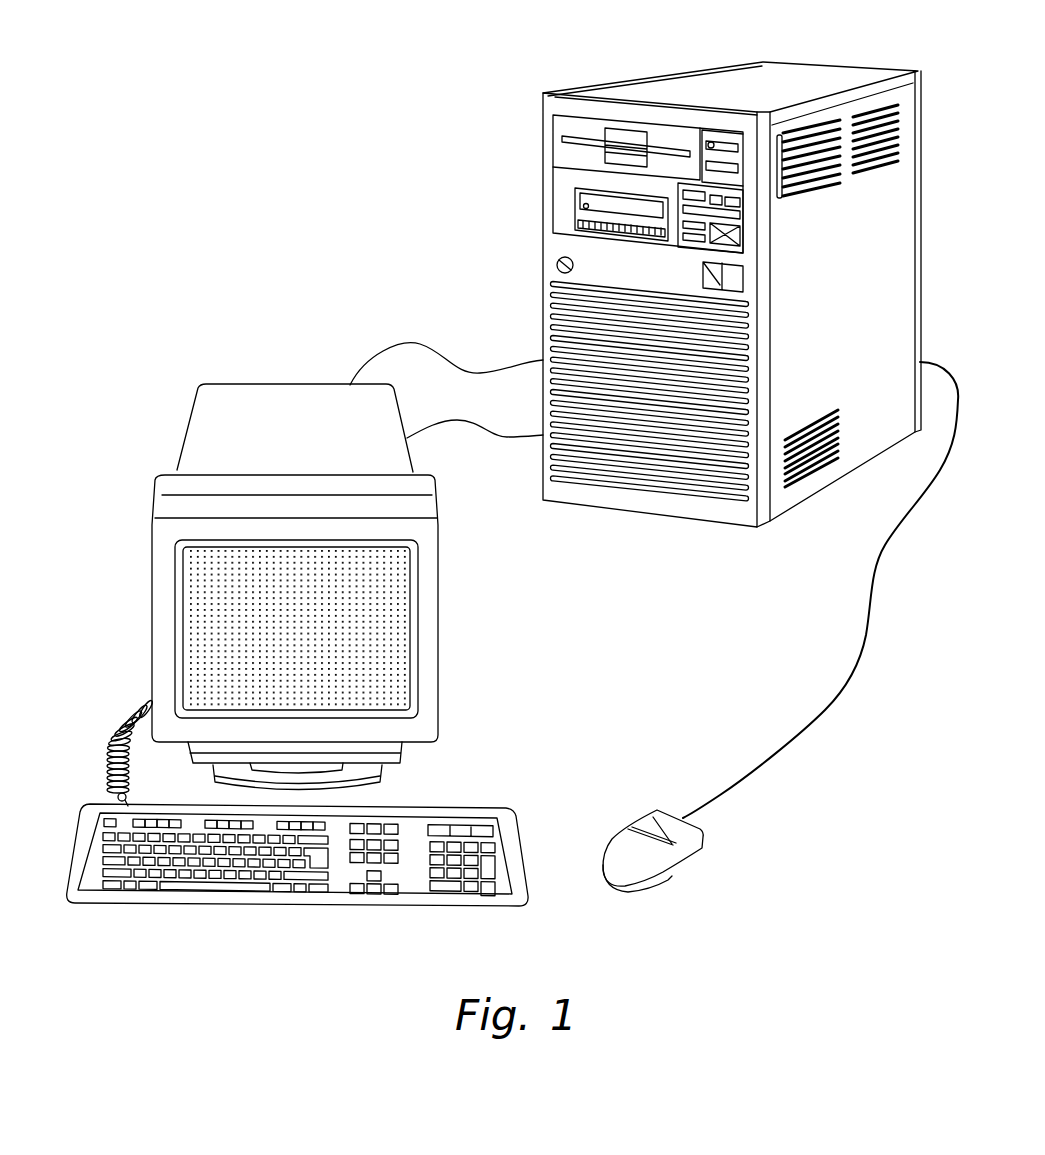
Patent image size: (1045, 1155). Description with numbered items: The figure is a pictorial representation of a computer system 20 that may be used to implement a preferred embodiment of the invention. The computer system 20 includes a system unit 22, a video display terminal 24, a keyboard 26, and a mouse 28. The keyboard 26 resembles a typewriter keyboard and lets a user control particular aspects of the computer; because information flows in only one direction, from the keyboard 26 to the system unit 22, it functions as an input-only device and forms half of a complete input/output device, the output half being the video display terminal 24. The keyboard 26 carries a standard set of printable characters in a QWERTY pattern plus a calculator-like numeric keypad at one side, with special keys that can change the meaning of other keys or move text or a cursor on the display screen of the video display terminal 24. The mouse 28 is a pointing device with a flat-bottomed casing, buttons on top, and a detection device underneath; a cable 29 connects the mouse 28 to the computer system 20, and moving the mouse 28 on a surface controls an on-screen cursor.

The computer system 20 is at (331, 259).
The system unit 22 is at (557, 248).
The video display terminal 24 is at (311, 407).
The keyboard 26 is at (328, 900).
The mouse 28 is at (658, 872).
The cable 29 is at (790, 752).